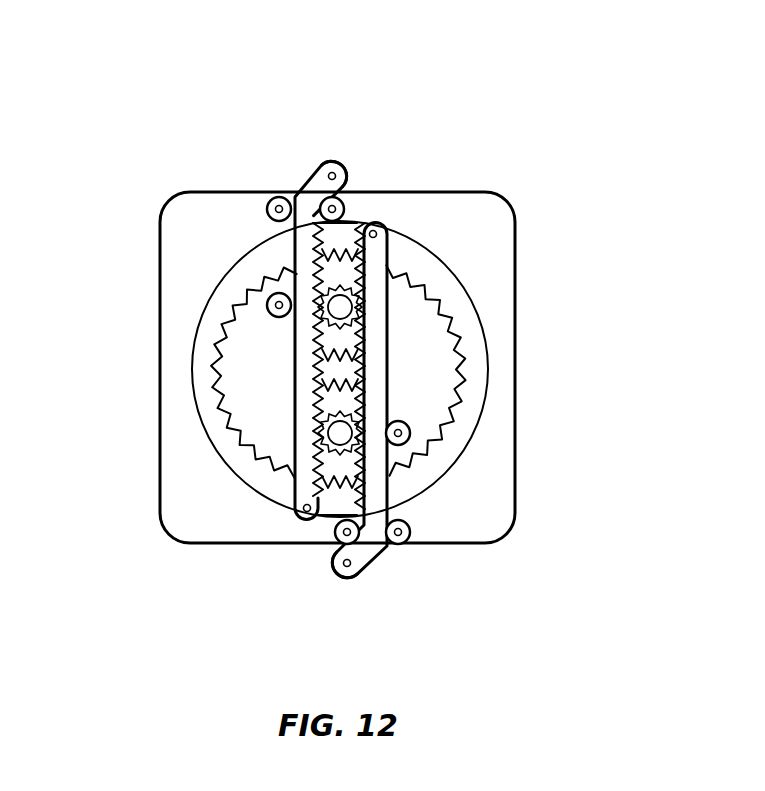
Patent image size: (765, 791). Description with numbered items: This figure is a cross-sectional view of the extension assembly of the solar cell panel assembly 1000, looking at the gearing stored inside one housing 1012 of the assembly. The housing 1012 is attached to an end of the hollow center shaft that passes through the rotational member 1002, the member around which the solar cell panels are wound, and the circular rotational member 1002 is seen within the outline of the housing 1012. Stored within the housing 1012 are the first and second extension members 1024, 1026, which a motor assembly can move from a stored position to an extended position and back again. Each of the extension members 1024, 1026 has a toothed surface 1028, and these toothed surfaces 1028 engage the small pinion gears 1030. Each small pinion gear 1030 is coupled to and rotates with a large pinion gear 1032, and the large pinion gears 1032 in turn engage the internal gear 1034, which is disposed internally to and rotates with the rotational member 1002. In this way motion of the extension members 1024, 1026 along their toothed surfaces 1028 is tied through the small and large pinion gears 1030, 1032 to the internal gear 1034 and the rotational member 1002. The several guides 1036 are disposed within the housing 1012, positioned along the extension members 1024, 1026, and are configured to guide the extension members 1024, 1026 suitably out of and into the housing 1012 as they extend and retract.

The solar cell panel assembly 1000 is at (396, 62).
The rotational member 1002 is at (198, 333).
The housing 1012 is at (510, 518).
The first extension member 1024 is at (313, 182).
The second extension member 1026 is at (362, 553).
The toothed surface 1028 is at (326, 393).
The small pinion gear 1030 is at (388, 262).
The large pinion gear 1032 is at (342, 348).
The internal gear 1034 is at (462, 392).
The guide 1036 is at (267, 297).